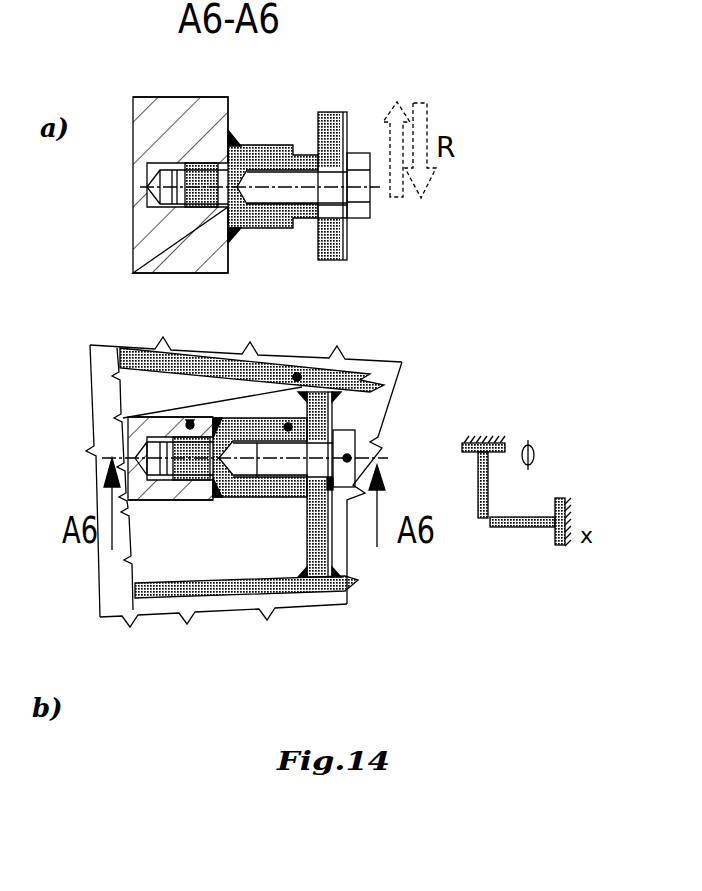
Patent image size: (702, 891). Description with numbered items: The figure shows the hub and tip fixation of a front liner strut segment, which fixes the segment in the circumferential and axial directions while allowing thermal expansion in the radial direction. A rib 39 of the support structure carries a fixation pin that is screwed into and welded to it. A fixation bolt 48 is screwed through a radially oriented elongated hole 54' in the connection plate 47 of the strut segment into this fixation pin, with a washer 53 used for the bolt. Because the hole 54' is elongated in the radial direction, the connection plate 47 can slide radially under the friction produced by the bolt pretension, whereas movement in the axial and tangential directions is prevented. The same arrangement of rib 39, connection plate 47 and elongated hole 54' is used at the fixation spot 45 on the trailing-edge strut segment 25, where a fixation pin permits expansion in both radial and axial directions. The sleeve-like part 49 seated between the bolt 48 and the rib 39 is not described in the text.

The strut segment 25 is at (303, 372).
The rib 39 is at (167, 125).
The fixation spot 45 is at (295, 317).
The connection plate 47 is at (330, 118).
The fixation bolt 48 is at (290, 177).
The sleeve 49 is at (248, 155).
The washer 53 is at (333, 490).
The elongated hole 54' is at (386, 231).